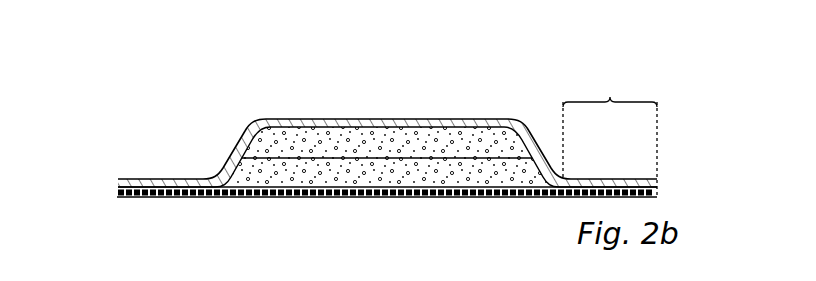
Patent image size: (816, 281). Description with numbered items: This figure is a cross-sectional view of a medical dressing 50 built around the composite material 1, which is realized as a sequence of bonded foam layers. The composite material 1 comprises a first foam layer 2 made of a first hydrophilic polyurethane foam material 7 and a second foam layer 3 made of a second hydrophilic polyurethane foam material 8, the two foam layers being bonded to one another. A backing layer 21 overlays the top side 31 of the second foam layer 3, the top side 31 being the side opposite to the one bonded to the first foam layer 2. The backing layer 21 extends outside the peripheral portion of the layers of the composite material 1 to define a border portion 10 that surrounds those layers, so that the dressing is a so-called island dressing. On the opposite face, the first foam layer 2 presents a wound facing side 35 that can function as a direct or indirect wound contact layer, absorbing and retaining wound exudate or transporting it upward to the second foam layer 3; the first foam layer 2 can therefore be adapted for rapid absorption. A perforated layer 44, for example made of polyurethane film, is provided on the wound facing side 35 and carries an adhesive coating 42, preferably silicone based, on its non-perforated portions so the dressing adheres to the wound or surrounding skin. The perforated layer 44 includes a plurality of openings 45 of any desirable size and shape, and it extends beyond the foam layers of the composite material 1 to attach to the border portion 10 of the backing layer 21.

The medical dressing 50 is at (219, 90).
The backing layer 21 is at (287, 119).
The top side 31 is at (360, 125).
The second hydrophilic polyurethane foam material 8 is at (415, 133).
The second foam layer 3 is at (527, 148).
The composite material 1 is at (532, 150).
The border portion 10 is at (610, 134).
The first foam layer 2 is at (550, 164).
The perforated layer 44 is at (118, 183).
The adhesive coating 42 is at (118, 193).
The openings 45 is at (157, 197).
The wound facing side 35 is at (380, 190).
The first hydrophilic polyurethane foam material 7 is at (448, 173).